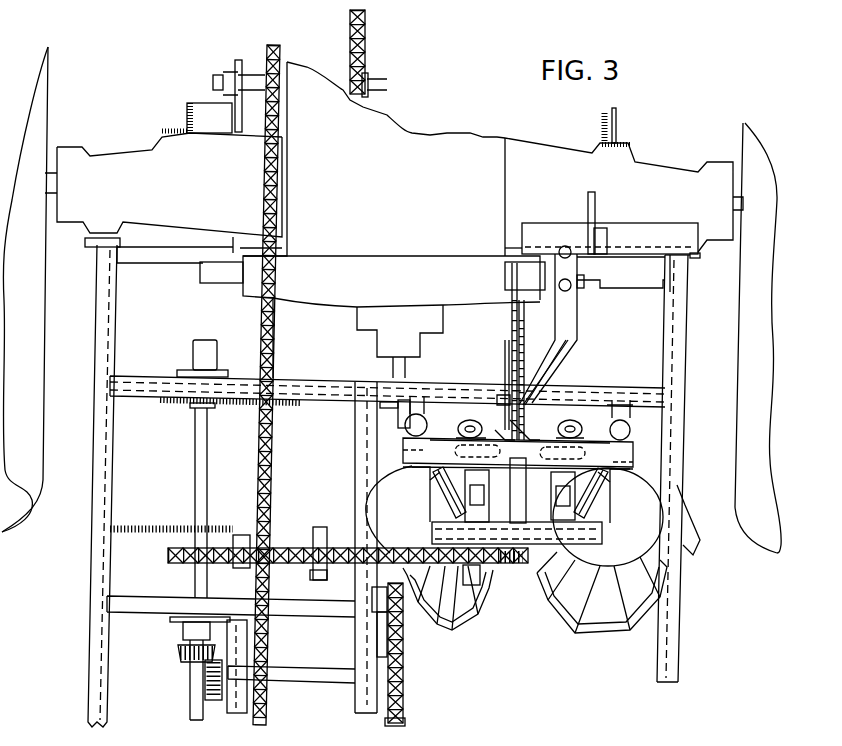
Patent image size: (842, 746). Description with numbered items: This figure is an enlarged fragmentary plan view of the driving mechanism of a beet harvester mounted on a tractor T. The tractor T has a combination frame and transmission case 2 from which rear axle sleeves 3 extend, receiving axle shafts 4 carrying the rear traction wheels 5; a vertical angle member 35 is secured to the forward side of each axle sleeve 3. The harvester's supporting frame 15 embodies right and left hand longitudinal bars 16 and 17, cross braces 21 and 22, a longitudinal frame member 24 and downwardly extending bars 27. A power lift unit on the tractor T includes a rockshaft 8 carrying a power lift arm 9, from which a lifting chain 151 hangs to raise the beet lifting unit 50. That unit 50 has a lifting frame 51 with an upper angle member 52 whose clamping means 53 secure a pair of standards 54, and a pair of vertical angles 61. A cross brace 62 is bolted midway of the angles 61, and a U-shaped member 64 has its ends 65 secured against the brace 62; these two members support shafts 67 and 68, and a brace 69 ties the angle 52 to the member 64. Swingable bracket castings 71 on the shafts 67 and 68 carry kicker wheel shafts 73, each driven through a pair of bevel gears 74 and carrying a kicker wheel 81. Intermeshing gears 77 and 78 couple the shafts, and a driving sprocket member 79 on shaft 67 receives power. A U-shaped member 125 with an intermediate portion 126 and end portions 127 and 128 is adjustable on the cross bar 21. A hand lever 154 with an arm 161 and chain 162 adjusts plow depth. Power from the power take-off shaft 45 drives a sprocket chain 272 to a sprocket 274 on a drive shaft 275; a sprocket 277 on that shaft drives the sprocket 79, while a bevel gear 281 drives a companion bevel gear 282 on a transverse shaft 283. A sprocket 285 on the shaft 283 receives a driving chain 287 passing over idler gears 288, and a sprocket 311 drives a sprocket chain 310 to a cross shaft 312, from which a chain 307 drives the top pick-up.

The combination frame and transmission case 2 is at (480, 181).
The rear axle sleeves 3 is at (135, 167).
The axle shafts 4 is at (50, 176).
The rear traction wheels 5 is at (40, 96).
The rockshaft 8 is at (216, 276).
The power lift arm 9 is at (570, 335).
The supporting frame 15 is at (60, 745).
The right hand longitudinal bar 16 is at (680, 379).
The left hand longitudinal bar 17 is at (93, 510).
The cross brace 21 is at (136, 384).
The cross brace 22 is at (160, 600).
The longitudinal frame member 24 is at (360, 459).
The downwardly extending bars 27 is at (695, 259).
The vertical angle member 35 is at (187, 118).
The power take-off shaft 45 is at (392, 364).
The beet lifting unit 50 is at (540, 424).
The lifting frame 51 is at (497, 420).
The upper angle member 52 is at (528, 452).
The clamping means 53 is at (428, 410).
The standards 54 is at (418, 408).
The vertical angles 61 is at (408, 449).
The cross brace 62 is at (628, 468).
The U-shaped member 64 is at (430, 509).
The ends of U-shaped member 65 is at (410, 472).
The kicker wheel drive shaft 67 is at (480, 505).
The kicker wheel drive shaft 68 is at (556, 505).
The brace 69 is at (512, 496).
The journal-supporting bracket castings 71 is at (435, 524).
The kicker wheel shaft 73 is at (438, 500).
The bevel gears 74 is at (462, 426).
The gear 77 is at (418, 558).
The gear 78 is at (603, 539).
The driving sprocket member 79 is at (502, 566).
The kicker wheel 81 is at (485, 619).
The U-shaped member 125 is at (381, 410).
The intermediate portion 126 is at (555, 378).
The end portion 127 is at (400, 420).
The end portion 128 is at (626, 432).
The lifting chain 151 is at (525, 400).
The hand lever 154 is at (511, 290).
The arm 161 is at (508, 366).
The chain 162 is at (505, 386).
The sprocket chain 272 is at (237, 408).
The sprocket 274 is at (184, 408).
The drive shaft 275 is at (196, 502).
The sprocket 277 is at (172, 550).
The bevel gear 281 is at (185, 652).
The bevel gear 282 is at (210, 700).
The transverse shaft 283 is at (290, 671).
The sprocket 285 is at (405, 675).
The driving chain 287 is at (405, 722).
The idler gears 288 is at (405, 615).
The chain 307 is at (349, 31).
The sprocket chain 310 is at (276, 338).
The sprocket 311 is at (247, 702).
The cross shaft 312 is at (374, 86).
The tractor T is at (464, 123).